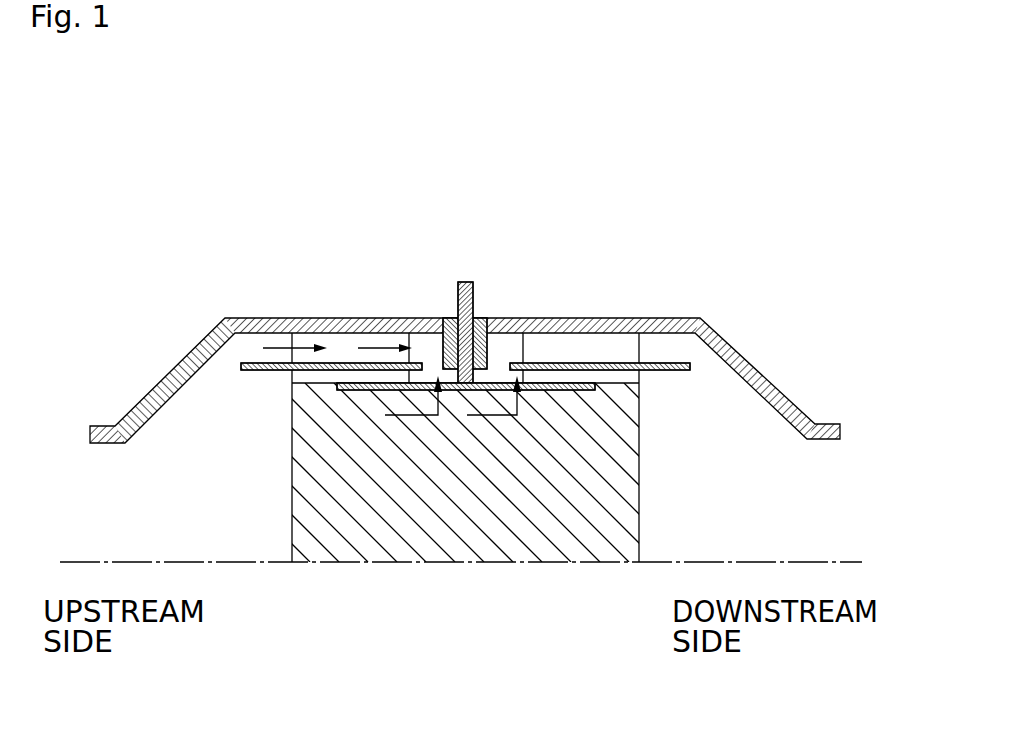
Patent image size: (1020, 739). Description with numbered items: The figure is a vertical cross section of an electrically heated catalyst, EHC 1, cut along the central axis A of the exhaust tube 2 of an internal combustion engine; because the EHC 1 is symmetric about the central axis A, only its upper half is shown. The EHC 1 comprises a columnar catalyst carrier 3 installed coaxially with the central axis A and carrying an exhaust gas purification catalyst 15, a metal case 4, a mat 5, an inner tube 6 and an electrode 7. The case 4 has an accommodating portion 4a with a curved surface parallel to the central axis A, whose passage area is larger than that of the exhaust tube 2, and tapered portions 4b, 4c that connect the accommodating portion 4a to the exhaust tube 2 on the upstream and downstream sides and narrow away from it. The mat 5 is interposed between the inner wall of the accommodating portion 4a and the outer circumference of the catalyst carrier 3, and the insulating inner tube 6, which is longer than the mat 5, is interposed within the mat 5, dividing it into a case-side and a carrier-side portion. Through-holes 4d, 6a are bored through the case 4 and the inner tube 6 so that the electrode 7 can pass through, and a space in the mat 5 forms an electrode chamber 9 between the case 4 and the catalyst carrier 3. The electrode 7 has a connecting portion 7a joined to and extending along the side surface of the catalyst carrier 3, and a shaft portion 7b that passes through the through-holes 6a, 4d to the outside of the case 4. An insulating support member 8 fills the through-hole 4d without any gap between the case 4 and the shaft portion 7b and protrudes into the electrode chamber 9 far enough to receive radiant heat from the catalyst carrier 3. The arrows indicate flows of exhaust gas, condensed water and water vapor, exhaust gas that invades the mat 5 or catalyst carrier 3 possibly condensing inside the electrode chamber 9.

The EHC 1 is at (253, 190).
The exhaust tube 2 is at (97, 425).
The catalyst carrier 3 is at (293, 490).
The case 4 is at (320, 318).
The accommodating portion 4a is at (622, 318).
The tapered portion 4b is at (180, 364).
The tapered portion 4c is at (783, 394).
The through-hole 4d is at (503, 318).
The mat 5 is at (617, 377).
The inner tube 6 is at (273, 370).
The through-hole 6a is at (499, 363).
The electrode 7 is at (463, 282).
The connecting portion 7a is at (368, 392).
The shaft portion 7b is at (480, 318).
The support member 8 is at (456, 318).
The electrode chamber 9 is at (428, 350).
The exhaust gas purification catalyst 15 is at (623, 493).
The central axis A is at (740, 562).